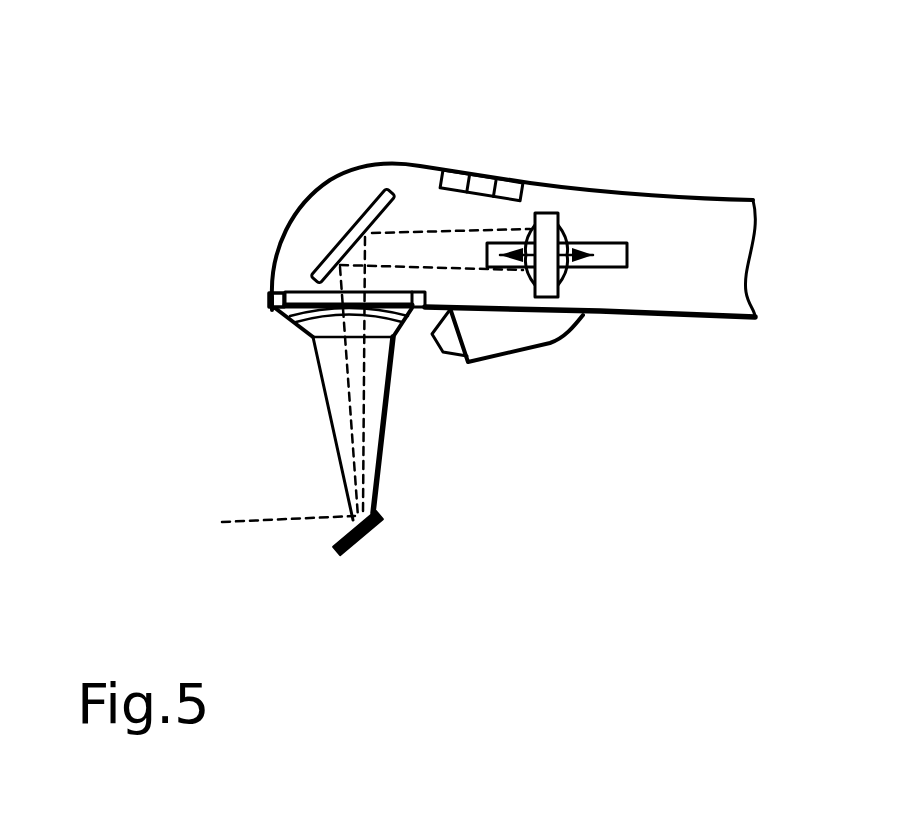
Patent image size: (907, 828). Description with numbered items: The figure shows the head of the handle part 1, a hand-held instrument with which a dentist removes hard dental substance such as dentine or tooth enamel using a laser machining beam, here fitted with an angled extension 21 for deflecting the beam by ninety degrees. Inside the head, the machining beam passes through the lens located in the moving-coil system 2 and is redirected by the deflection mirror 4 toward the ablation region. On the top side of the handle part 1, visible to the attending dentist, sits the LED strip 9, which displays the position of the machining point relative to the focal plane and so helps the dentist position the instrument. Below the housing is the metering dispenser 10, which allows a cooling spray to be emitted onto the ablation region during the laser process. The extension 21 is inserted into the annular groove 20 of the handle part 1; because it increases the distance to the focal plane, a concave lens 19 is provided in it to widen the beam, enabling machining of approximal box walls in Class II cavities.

The handle part 1 is at (802, 167).
The moving-coil system 2 is at (562, 233).
The deflection mirror 4 is at (357, 211).
The LED strip 9 is at (482, 173).
The metering dispenser 10 is at (517, 327).
The concave lens 19 is at (325, 320).
The annular groove 20 is at (276, 290).
The extension 21 is at (420, 414).